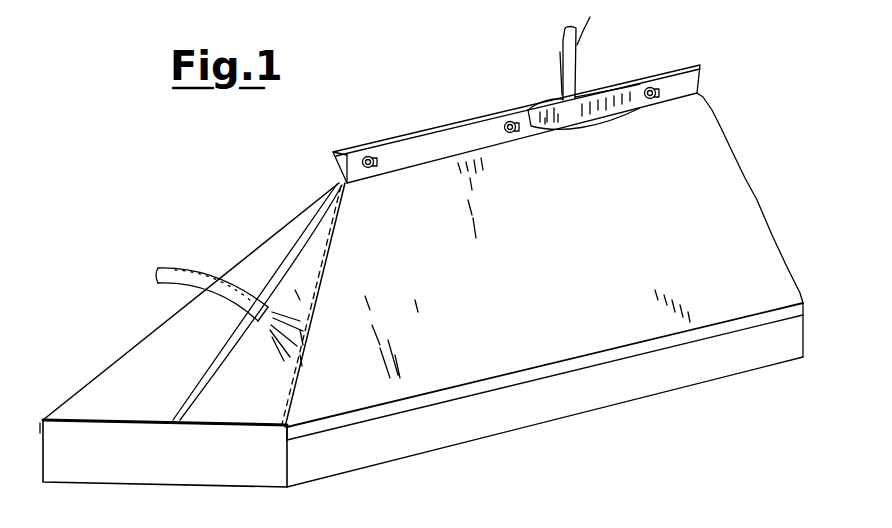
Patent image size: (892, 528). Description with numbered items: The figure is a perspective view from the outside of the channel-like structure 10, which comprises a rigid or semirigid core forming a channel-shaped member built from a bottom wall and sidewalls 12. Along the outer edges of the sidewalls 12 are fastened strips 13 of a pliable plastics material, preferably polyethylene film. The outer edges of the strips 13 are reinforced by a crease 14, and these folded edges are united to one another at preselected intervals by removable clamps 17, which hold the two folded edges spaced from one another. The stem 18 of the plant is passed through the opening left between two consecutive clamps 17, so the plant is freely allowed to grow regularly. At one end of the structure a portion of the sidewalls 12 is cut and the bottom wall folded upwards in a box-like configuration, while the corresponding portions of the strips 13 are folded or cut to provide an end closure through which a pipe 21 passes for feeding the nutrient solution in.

The channel-like structure 10 is at (590, 414).
The sidewalls 12 is at (690, 370).
The strips 13 is at (347, 237).
The crease 14 is at (443, 135).
The removable clamps 17 is at (380, 157).
The stem 18 is at (576, 69).
The pipe 21 is at (182, 275).